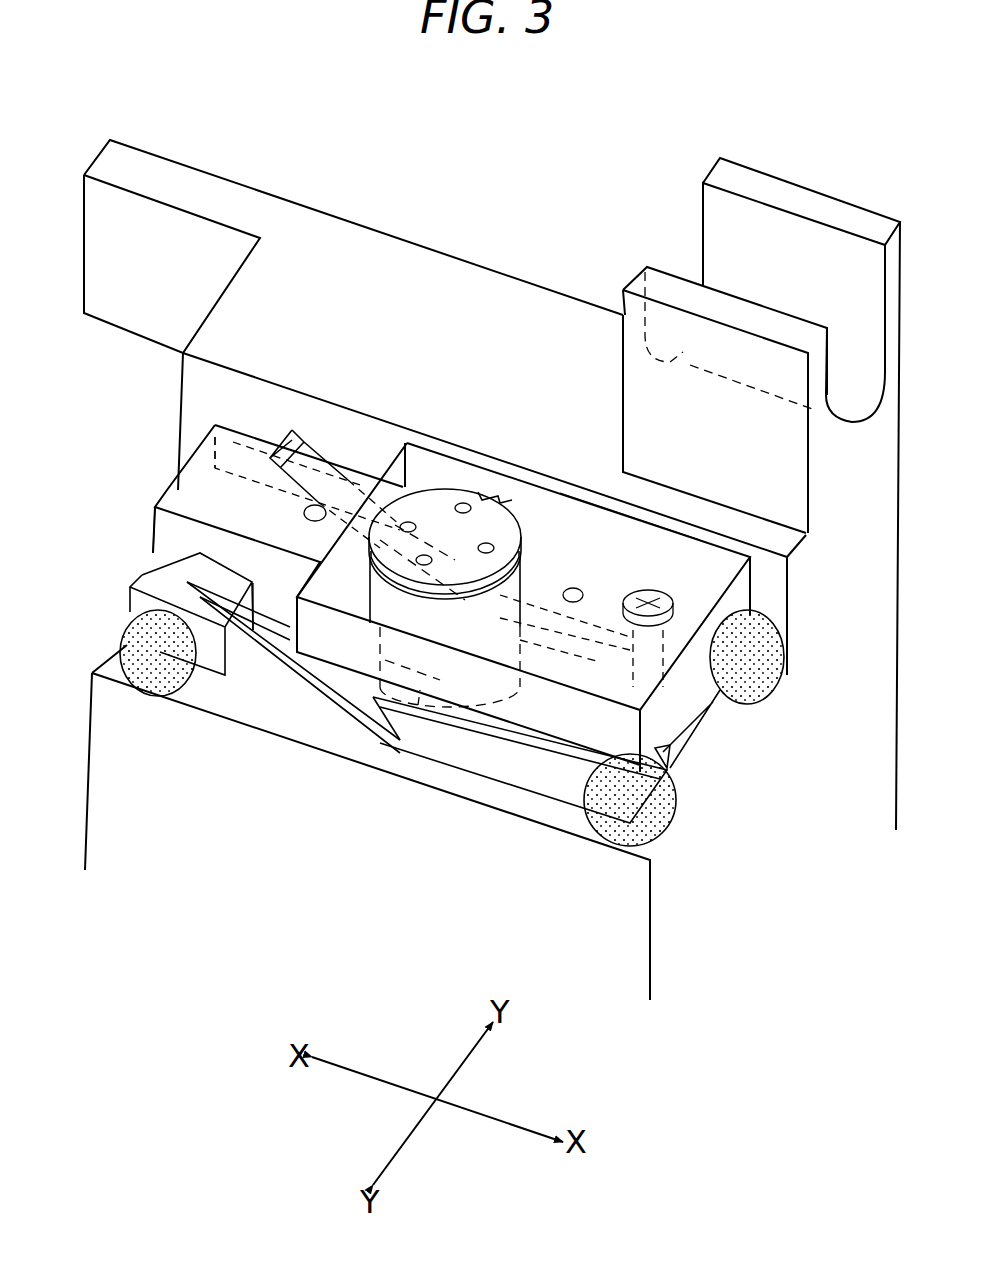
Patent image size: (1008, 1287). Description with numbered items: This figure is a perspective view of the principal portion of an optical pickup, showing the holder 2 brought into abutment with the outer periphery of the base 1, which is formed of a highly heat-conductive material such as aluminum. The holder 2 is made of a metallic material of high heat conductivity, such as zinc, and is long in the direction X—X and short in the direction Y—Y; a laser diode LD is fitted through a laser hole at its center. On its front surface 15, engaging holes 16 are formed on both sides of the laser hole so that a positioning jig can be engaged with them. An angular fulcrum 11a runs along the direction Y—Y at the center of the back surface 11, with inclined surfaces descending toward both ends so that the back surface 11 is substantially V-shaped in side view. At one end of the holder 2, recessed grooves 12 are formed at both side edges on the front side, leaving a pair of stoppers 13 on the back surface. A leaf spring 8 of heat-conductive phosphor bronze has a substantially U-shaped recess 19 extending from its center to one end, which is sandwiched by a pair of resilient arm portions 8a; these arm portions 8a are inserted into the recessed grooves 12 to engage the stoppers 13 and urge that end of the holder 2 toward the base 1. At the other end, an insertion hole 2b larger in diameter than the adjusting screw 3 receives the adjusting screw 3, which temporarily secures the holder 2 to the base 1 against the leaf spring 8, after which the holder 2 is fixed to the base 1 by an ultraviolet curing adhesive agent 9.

The base 1 is at (93, 706).
The holder 2 is at (168, 482).
The insertion hole 2b is at (630, 650).
The adjusting screw 3 is at (665, 598).
The leaf spring 8 is at (547, 770).
The resilient arm portions 8a is at (298, 438).
The ultraviolet curing adhesive agent 9 is at (165, 695).
The back surface 11 is at (392, 712).
The angular fulcrum 11a is at (418, 717).
The recessed grooves 12 is at (160, 518).
The stoppers 13 is at (240, 440).
The front surface 15 is at (555, 497).
The engaging holes 16 is at (580, 590).
The recess 19 is at (253, 630).
The laser diode LD is at (448, 495).